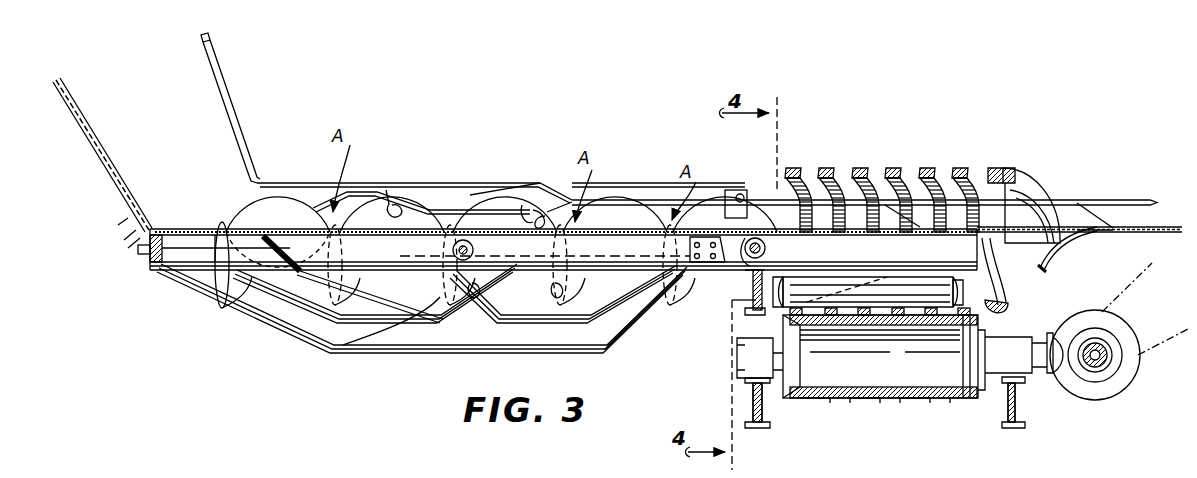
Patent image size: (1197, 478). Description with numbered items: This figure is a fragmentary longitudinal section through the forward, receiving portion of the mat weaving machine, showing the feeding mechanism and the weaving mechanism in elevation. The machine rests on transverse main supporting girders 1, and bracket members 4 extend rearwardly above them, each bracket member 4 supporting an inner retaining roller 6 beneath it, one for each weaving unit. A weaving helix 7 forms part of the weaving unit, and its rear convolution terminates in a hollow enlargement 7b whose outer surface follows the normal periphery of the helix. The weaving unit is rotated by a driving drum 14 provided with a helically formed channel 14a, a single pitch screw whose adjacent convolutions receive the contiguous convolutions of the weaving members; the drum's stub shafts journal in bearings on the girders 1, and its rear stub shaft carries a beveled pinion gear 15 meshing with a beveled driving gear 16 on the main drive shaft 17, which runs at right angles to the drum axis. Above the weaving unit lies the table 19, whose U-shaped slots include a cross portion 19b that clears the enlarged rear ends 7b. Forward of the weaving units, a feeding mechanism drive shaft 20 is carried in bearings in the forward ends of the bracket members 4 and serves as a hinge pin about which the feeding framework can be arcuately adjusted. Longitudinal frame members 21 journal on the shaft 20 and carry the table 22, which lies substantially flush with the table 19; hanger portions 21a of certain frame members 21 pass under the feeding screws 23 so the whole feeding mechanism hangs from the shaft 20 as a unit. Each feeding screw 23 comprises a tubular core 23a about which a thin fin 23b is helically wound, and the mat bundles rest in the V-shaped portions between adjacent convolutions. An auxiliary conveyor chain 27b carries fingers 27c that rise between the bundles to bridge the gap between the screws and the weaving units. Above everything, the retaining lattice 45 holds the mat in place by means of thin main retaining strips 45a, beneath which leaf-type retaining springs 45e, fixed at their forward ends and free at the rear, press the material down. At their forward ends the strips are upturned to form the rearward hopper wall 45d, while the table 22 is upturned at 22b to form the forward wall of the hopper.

The main supporting girder 1 is at (763, 402).
The bracket member 4 is at (838, 212).
The weaving unit inner retaining roller 6 is at (893, 278).
The weaving helix 7 is at (963, 167).
The hollow enlargement 7b is at (1030, 215).
The driving drum 14 is at (900, 365).
The helically formed channel 14a is at (814, 398).
The beveled pinion gear 15 is at (1060, 340).
The beveled driving gear 16 is at (1090, 390).
The main drive shaft 17 is at (1108, 360).
The table 19 is at (1146, 233).
The cross portion 19b is at (1065, 250).
The feeding mechanism drive shaft 20 is at (745, 287).
The frame member 21 is at (643, 268).
The hanger portion 21a is at (377, 338).
The table 22 is at (660, 226).
The upturned forward wall 22b is at (118, 176).
The feeding screw 23 is at (286, 206).
The tubular shank or core 23a is at (238, 298).
The fin 23b is at (357, 278).
The chain 27b is at (463, 240).
The finger 27c is at (587, 280).
The retaining lattice 45 is at (1106, 201).
The main retaining strip 45a is at (487, 195).
The rearward hopper wall 45d is at (213, 92).
The retaining spring 45e is at (387, 190).